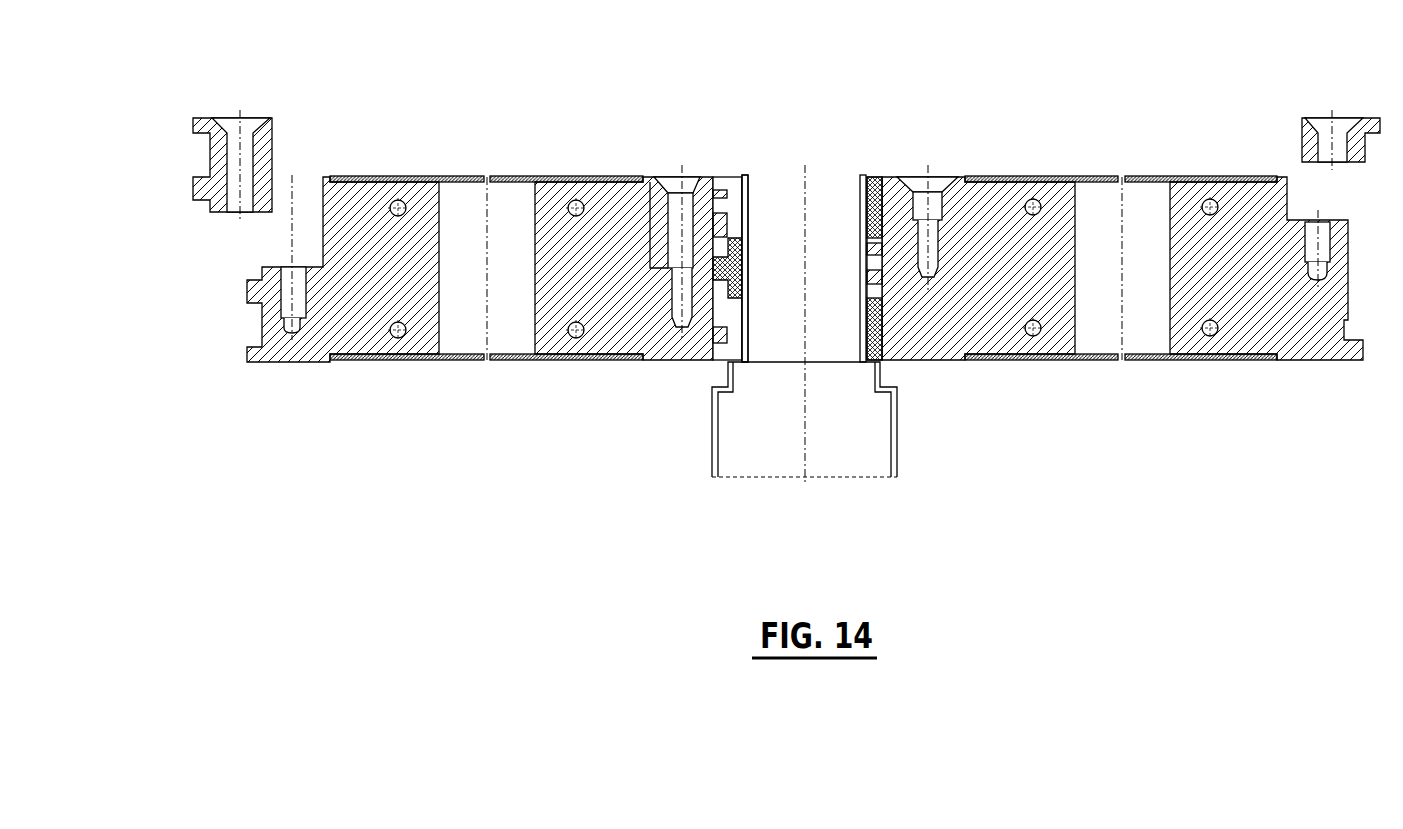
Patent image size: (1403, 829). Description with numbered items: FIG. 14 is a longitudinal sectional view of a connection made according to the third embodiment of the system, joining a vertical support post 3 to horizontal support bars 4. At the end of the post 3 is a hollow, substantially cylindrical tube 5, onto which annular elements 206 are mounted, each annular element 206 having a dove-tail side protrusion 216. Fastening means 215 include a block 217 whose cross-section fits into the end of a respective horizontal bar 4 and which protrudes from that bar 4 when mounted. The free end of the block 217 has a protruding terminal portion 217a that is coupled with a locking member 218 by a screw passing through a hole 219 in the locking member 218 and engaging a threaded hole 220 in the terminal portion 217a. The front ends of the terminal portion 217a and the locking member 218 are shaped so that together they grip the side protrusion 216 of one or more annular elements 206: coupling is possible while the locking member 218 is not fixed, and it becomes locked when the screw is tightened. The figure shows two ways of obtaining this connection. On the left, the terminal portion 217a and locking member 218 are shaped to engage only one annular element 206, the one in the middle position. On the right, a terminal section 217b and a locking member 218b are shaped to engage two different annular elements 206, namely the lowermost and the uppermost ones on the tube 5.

The support post 3 is at (903, 445).
The support bar 4 is at (552, 167).
The tube 5 is at (757, 330).
The annular element 206 is at (860, 333).
The fastening means 215 is at (685, 160).
The side protrusion 216 is at (720, 177).
The block 217 is at (560, 293).
The terminal portion 217a is at (697, 336).
The terminal section 217b is at (904, 300).
The locking member 218 is at (282, 128).
The locking member 218b is at (905, 205).
The hole 219 is at (230, 157).
The threaded hole 220 is at (292, 270).